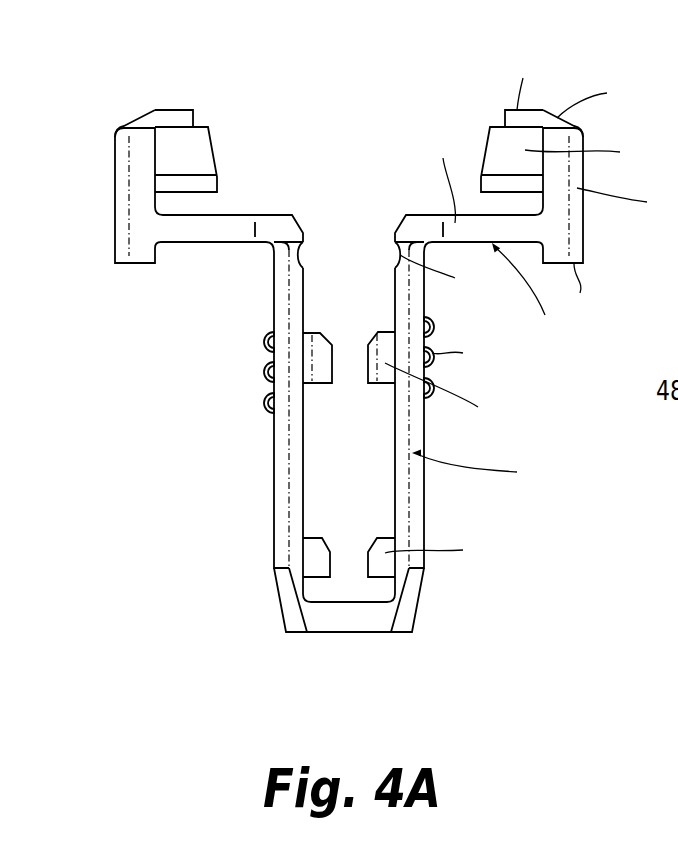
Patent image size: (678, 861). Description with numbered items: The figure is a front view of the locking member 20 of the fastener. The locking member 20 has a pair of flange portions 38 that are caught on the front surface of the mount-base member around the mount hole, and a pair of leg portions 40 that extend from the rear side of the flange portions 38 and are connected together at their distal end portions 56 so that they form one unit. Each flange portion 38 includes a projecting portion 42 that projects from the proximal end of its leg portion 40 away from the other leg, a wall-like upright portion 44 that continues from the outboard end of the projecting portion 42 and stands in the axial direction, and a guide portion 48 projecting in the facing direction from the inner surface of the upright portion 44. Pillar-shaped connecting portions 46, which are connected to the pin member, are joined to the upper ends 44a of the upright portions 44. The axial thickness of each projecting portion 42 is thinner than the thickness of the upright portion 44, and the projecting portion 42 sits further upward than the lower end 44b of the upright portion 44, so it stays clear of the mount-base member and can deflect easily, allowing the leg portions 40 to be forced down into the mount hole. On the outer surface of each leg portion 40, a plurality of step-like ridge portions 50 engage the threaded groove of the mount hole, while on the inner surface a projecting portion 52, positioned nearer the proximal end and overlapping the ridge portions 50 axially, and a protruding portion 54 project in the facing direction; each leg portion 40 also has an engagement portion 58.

The locking member 20 is at (358, 367).
The flange portion 38 is at (203, 235).
The leg portion 40 is at (280, 465).
The projecting portion 42 is at (232, 225).
The upright portion 44 is at (97, 190).
The upper end of upright portion 44a is at (137, 120).
The lower end of upright portion 44b is at (128, 267).
The connecting portion 46 is at (175, 111).
The guide portion 48 is at (173, 153).
The ridge portion 50 is at (265, 370).
The projecting portion 52 is at (322, 360).
The protruding portion 54 is at (317, 555).
The distal end portion 56 is at (337, 620).
The engagement portion 58 is at (299, 252).